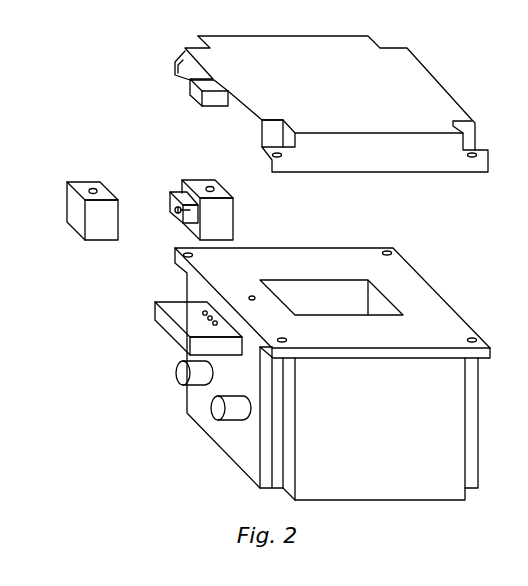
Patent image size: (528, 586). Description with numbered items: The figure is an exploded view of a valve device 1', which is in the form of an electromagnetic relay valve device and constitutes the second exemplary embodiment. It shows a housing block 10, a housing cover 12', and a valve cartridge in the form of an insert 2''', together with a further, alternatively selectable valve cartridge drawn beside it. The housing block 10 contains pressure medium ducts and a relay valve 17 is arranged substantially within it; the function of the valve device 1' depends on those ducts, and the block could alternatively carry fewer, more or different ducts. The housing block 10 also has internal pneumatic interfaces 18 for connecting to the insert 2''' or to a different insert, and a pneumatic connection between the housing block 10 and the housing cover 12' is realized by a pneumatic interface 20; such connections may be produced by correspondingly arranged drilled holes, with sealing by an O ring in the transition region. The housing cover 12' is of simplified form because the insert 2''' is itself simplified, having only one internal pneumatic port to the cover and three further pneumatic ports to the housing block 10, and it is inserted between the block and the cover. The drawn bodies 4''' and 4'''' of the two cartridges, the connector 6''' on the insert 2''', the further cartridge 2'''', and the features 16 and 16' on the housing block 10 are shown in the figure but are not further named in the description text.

The valve device 1' is at (331, 92).
The housing cover 12' is at (331, 104).
The connector module 2'''' is at (86, 188).
The module housing 4'''' is at (100, 193).
The insert 2''' is at (197, 188).
The module housing 4''' is at (215, 193).
The connector 6''' is at (172, 207).
The housing block 10 is at (386, 430).
The cylindrical connector 16 is at (182, 381).
The cylindrical connector 16' is at (209, 416).
The relay valve 17 is at (328, 292).
The internal pneumatic interfaces 18 is at (203, 308).
The pneumatic interface 20 is at (257, 300).